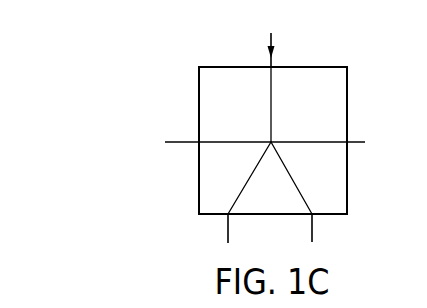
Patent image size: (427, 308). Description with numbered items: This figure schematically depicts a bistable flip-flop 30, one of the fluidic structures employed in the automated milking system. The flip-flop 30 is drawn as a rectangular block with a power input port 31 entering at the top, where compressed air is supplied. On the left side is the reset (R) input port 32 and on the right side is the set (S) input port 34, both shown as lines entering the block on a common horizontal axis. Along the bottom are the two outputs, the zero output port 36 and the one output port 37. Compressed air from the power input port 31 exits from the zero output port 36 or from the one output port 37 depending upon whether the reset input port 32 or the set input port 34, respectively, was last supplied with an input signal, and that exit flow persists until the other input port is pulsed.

The bistable flip-flop 30 is at (199, 85).
The power input port 31 is at (275, 63).
The reset (R) input port 32 is at (166, 143).
The set (S) input port 34 is at (364, 143).
The "0" output port 36 is at (313, 240).
The "1" output port 37 is at (227, 239).